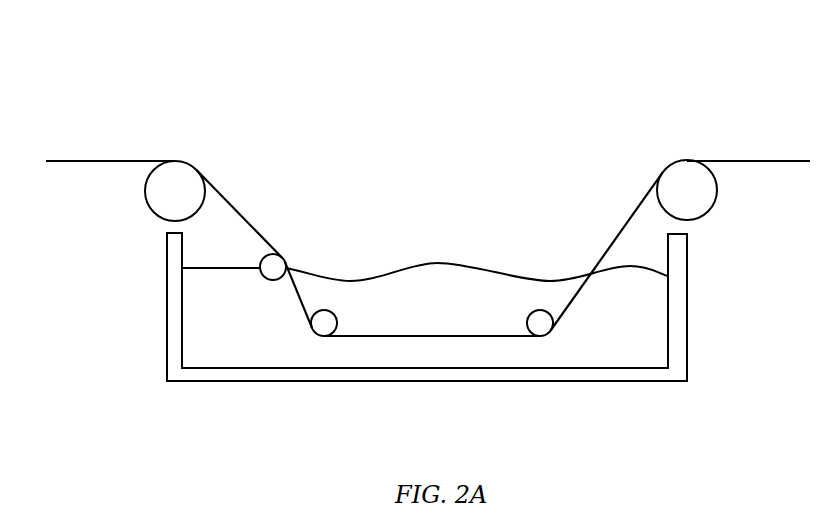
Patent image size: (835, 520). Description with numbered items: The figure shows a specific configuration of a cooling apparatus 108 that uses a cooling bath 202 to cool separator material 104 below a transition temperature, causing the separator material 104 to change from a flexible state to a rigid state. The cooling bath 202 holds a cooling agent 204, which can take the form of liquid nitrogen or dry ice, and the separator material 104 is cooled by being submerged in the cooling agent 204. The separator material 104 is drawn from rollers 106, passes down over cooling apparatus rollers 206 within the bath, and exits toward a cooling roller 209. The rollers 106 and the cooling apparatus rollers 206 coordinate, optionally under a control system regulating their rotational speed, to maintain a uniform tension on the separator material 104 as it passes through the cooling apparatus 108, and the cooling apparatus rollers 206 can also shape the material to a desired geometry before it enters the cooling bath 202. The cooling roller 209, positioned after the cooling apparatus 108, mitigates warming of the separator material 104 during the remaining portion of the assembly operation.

The cooling apparatus 108 is at (60, 62).
The separator material 104 is at (108, 160).
The rollers 106 is at (155, 213).
The cooling roller 209 is at (712, 212).
The cooling bath 202 is at (167, 381).
The cooling agent 204 is at (462, 265).
The cooling apparatus rollers 206 is at (286, 262).